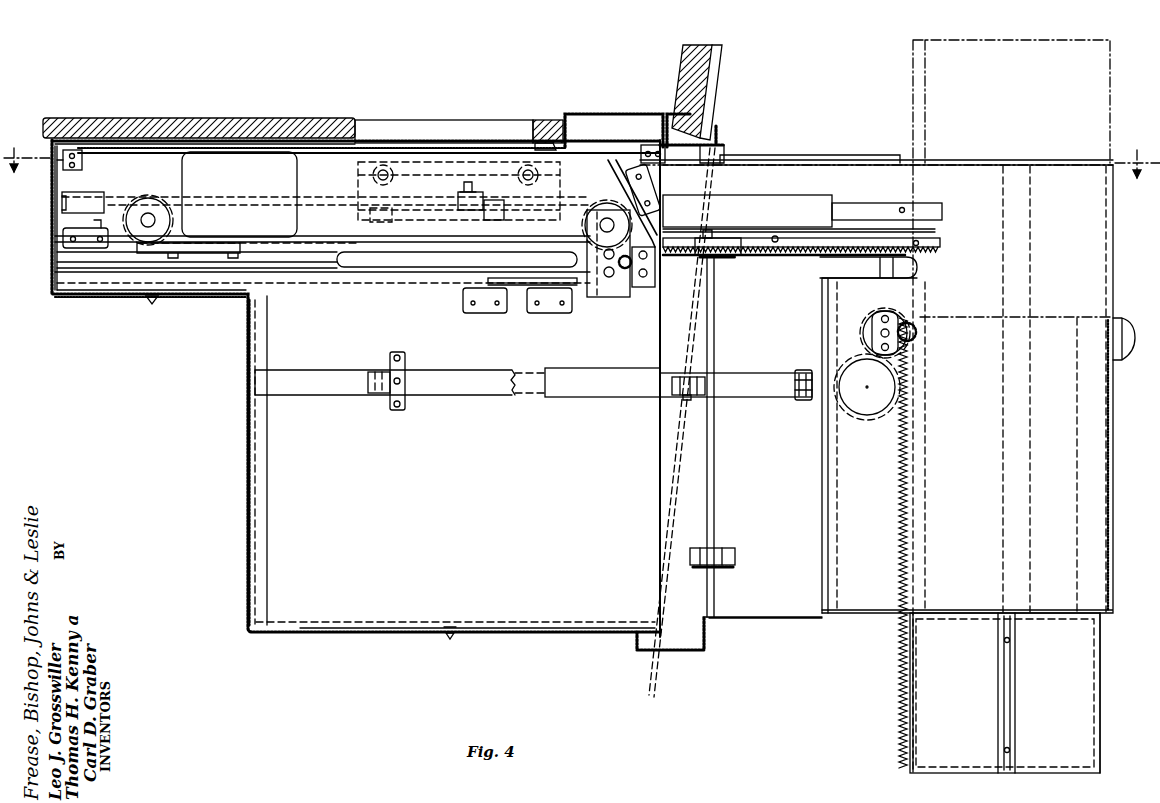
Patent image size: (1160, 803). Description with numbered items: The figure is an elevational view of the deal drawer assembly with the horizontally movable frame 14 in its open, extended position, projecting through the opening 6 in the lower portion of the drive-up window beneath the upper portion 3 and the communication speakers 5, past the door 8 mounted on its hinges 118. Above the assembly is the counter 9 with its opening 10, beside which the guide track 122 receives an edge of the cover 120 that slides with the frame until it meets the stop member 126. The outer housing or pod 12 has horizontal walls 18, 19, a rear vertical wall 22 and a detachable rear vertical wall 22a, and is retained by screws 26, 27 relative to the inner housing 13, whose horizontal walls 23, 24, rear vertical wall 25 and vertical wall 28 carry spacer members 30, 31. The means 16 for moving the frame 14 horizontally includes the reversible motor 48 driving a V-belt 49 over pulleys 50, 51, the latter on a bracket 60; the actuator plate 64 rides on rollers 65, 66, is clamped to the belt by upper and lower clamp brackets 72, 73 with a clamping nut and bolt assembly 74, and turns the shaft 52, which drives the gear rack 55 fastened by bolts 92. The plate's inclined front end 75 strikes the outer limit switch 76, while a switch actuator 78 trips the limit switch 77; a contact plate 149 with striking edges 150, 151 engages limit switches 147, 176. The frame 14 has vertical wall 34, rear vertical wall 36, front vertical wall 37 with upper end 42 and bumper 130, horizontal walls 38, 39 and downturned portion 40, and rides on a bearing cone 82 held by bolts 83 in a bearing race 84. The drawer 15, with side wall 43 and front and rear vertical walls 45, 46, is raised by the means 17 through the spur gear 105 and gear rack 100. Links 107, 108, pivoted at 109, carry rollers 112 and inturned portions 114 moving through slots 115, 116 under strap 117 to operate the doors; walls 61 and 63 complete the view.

The upper portion 3 is at (713, 70).
The communication speakers 5 is at (582, 174).
The opening 6 is at (722, 150).
The door 8 is at (796, 157).
The work surface or counter 9 is at (185, 118).
The opening 10 is at (370, 120).
The outer housing or pod 12 is at (244, 508).
The inner housing 13 is at (266, 537).
The horizontally movable frame 14 is at (1095, 290).
The vertically movable drawer or tray 15 is at (1117, 120).
The means for moving the frame horizontally 16 is at (277, 282).
The means for moving the tray vertically 17 is at (905, 320).
The horizontal wall 18 is at (146, 300).
The horizontal wall 19 is at (464, 634).
The rear vertical wall 22 is at (247, 458).
The rear vertical wall 22a is at (53, 226).
The horizontal wall 23 is at (250, 150).
The horizontal wall 24 is at (396, 620).
The rear vertical wall 25 is at (258, 466).
The screws 26 is at (447, 638).
The screws 27 is at (156, 305).
The vertical wall 28 is at (512, 495).
The spacer member 30 is at (666, 160).
The spacer member 31 is at (62, 162).
The vertical wall 34 is at (855, 447).
The rear vertical wall 36 is at (822, 476).
The front vertical wall 37 is at (1109, 453).
The horizontal wall 38 is at (783, 257).
The upper horizontal wall 39 is at (836, 163).
The downturned portion 40 is at (920, 195).
The upper end 42 is at (1113, 316).
The side wall 43 is at (1021, 693).
The front vertical wall 45 is at (1101, 700).
The rear vertical wall 46 is at (915, 690).
The reversible motor 48 is at (326, 197).
The V-belt 49 is at (322, 244).
The pulley 50 is at (138, 233).
The pulley 51 is at (608, 205).
The shaft 52 is at (624, 270).
The gear rack 55 is at (930, 243).
The bracket 60 is at (597, 297).
The bar 61 is at (872, 277).
The plate 63 is at (436, 276).
The actuator plate 64 is at (459, 191).
The roller 65 is at (395, 175).
The roller 66 is at (540, 175).
The upper clamp bracket 72 is at (484, 200).
The lower clamp bracket 73 is at (505, 214).
The clamping nut and bolt assembly 74 is at (473, 188).
The inclined front end 75 is at (612, 163).
The outer limit switch 76 is at (657, 202).
The limit switch 77 is at (85, 249).
The switch actuator 78 is at (370, 213).
The bearing cone 82 is at (943, 210).
The bolts 83 is at (901, 207).
The bearing race 84 is at (806, 195).
The bolts 92 is at (778, 236).
The gear rack 100 is at (898, 462).
The spur gear 105 is at (874, 314).
The link 107 is at (480, 395).
The link 108 is at (758, 397).
The pivot 109 is at (803, 368).
The roller 112 is at (674, 376).
The inturned portion 114 is at (368, 382).
The elongated slot 115 is at (615, 397).
The second elongated slot 116 is at (290, 394).
The strap 117 is at (404, 395).
The hinges 118 is at (696, 256).
The cover 120 is at (500, 142).
The guide track 122 is at (230, 136).
The stop member 126 is at (556, 148).
The bumper 130 is at (1124, 350).
The limit switch 147 is at (548, 313).
The contact plate 149 is at (535, 283).
The striking edge 150 is at (503, 278).
The striking edge 151 is at (644, 288).
The limit switch 176 is at (485, 313).